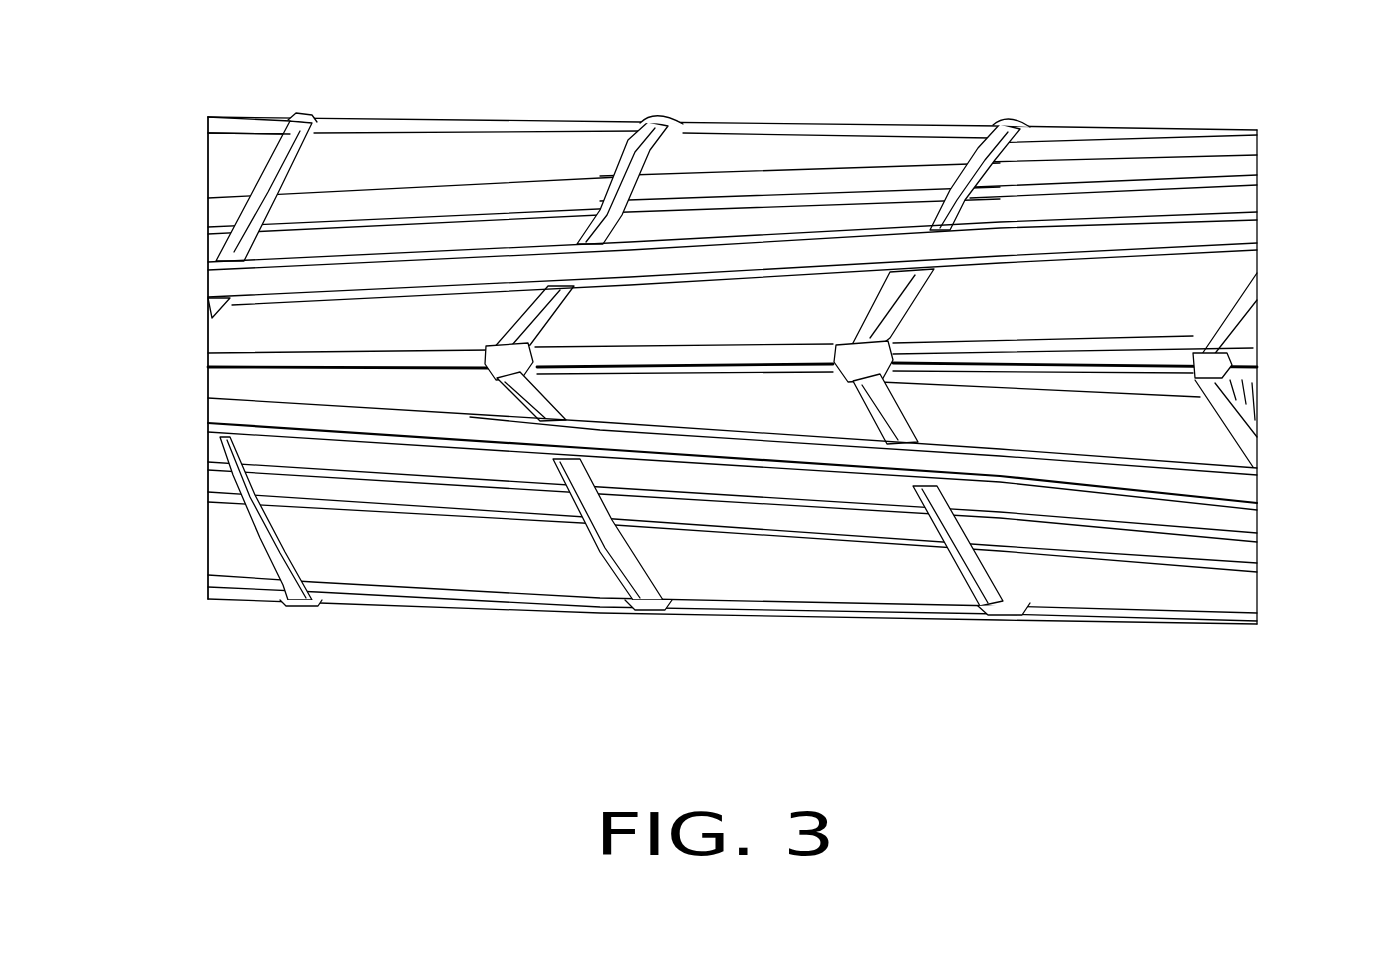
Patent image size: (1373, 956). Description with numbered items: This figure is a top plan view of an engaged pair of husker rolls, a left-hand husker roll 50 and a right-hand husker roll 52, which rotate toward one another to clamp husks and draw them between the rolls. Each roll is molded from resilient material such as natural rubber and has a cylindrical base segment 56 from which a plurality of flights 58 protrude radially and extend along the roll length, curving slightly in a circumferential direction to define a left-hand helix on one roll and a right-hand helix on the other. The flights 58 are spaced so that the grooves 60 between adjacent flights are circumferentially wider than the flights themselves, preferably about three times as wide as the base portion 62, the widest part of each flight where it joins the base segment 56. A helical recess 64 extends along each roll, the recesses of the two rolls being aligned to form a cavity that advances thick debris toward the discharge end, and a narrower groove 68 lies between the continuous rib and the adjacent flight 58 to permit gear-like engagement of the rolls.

The husker roll 50 is at (456, 612).
The husker roll 52 is at (553, 114).
The cylindrical base segment 56 is at (208, 164).
The flights 58 is at (812, 122).
The grooves 60 is at (222, 330).
The base portion 62 is at (208, 127).
The helical recess 64 is at (1000, 133).
The groove 68 is at (735, 220).